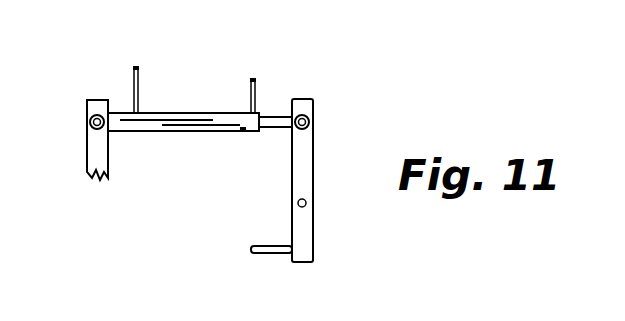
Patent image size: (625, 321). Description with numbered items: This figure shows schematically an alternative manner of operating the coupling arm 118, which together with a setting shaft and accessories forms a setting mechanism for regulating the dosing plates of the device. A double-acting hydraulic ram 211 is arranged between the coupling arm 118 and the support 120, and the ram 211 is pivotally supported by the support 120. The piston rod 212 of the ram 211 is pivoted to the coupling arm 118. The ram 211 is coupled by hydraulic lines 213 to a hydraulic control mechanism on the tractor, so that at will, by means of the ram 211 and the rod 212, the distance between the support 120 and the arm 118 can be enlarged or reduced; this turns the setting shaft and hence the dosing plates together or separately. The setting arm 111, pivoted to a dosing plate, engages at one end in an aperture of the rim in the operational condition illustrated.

The setting arm 111 is at (251, 251).
The coupling arm 118 is at (299, 158).
The support 120 is at (88, 156).
The double-acting hydraulic ram 211 is at (225, 130).
The piston rod 212 is at (277, 117).
The hydraulic lines 213 is at (133, 72).